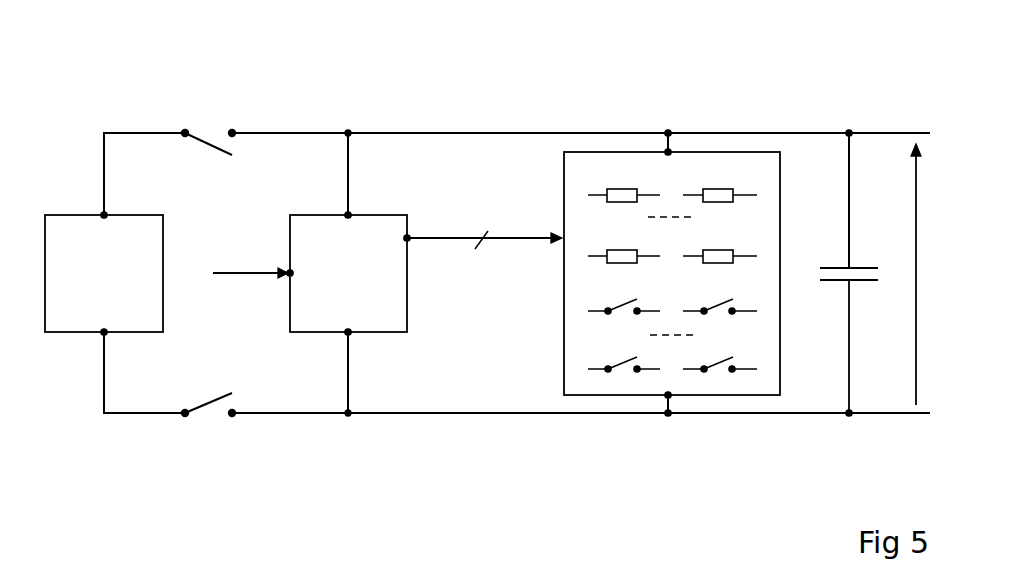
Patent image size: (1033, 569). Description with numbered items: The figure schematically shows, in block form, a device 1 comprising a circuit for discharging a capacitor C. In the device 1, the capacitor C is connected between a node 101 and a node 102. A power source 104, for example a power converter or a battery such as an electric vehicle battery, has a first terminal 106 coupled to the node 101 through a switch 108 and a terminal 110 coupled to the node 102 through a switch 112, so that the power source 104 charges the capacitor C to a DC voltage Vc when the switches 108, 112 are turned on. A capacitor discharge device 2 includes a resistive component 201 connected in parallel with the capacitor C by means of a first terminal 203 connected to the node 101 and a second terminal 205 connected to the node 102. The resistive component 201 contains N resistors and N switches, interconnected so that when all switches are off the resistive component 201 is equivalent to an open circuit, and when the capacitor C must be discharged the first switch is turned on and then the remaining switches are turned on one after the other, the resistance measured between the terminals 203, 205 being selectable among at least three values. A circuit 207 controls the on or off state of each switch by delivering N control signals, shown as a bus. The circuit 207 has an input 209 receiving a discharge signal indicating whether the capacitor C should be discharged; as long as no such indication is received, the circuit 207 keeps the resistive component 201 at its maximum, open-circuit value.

The device 1 is at (118, 102).
The capacitor discharge device 2 is at (500, 181).
The node 101 is at (852, 122).
The node 102 is at (846, 420).
The power source 104 is at (104, 273).
The first terminal 106 is at (102, 213).
The switch 108 is at (208, 136).
The terminal 110 is at (102, 334).
The switch 112 is at (212, 410).
The resistive component 201 is at (740, 150).
The first terminal 203 is at (672, 150).
The second terminal 205 is at (658, 400).
The circuit 207 is at (348, 273).
The input 209 is at (283, 269).